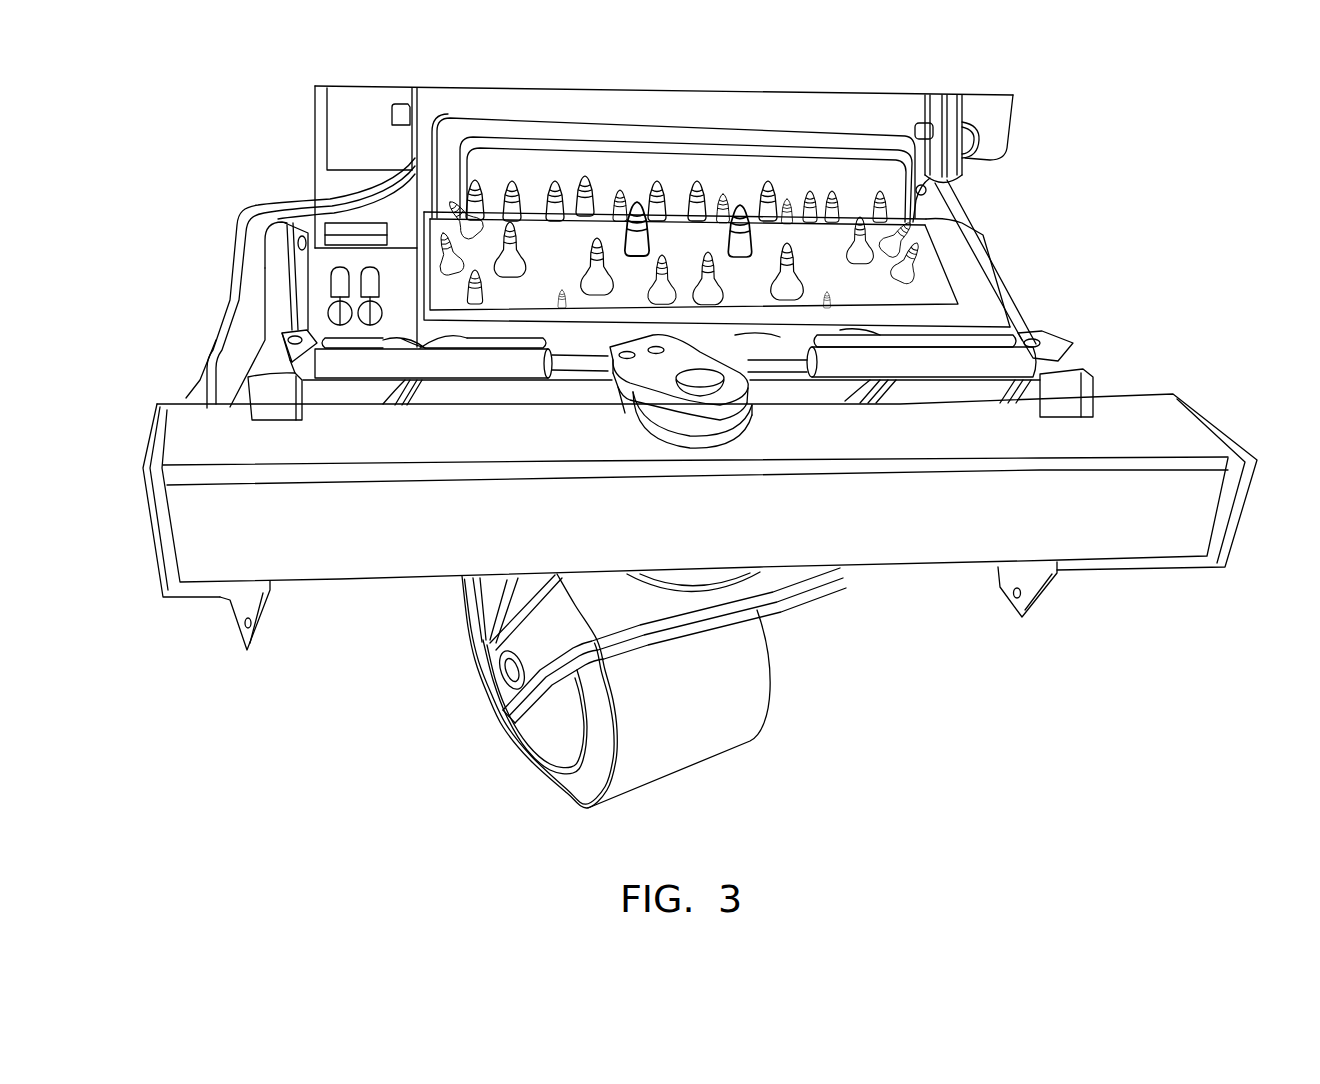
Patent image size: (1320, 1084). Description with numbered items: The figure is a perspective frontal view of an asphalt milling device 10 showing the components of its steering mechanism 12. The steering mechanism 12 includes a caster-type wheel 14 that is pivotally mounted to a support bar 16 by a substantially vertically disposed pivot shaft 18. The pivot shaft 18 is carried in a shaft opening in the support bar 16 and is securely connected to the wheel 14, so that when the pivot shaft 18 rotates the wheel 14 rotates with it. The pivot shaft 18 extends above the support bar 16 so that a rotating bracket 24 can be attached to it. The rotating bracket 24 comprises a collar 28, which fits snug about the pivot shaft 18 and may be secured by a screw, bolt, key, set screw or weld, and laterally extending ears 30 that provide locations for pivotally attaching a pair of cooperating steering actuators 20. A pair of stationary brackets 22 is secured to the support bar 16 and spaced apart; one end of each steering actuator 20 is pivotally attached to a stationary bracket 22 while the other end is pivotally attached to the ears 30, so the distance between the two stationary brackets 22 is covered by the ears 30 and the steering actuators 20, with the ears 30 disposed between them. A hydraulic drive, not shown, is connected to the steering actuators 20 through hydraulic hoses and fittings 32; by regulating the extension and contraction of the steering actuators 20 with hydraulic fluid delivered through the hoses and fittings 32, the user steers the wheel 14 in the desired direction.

The asphalt milling device 10 is at (985, 200).
The steering mechanism 12 is at (1112, 344).
The wheel 14 is at (710, 667).
The support bar 16 is at (912, 518).
The pivot shaft 18 is at (677, 353).
The steering actuators 20 is at (388, 362).
The stationary brackets 22 is at (290, 357).
The rotating bracket 24 is at (673, 352).
The collar 28 is at (710, 420).
The ears 30 is at (643, 397).
The hydraulic hoses and fittings 32 is at (830, 336).